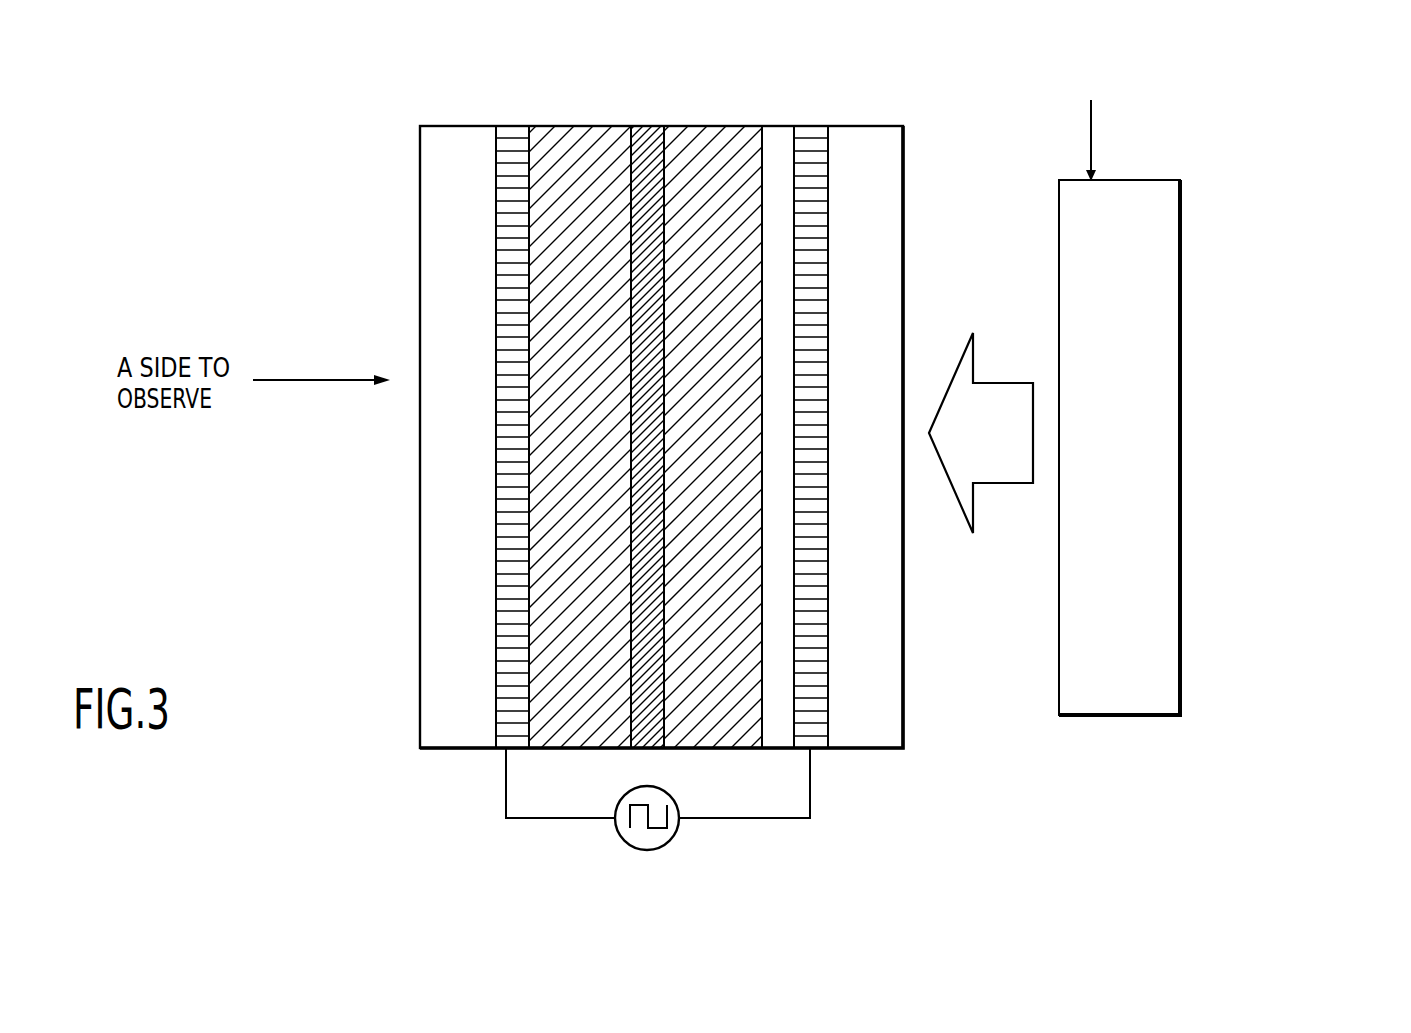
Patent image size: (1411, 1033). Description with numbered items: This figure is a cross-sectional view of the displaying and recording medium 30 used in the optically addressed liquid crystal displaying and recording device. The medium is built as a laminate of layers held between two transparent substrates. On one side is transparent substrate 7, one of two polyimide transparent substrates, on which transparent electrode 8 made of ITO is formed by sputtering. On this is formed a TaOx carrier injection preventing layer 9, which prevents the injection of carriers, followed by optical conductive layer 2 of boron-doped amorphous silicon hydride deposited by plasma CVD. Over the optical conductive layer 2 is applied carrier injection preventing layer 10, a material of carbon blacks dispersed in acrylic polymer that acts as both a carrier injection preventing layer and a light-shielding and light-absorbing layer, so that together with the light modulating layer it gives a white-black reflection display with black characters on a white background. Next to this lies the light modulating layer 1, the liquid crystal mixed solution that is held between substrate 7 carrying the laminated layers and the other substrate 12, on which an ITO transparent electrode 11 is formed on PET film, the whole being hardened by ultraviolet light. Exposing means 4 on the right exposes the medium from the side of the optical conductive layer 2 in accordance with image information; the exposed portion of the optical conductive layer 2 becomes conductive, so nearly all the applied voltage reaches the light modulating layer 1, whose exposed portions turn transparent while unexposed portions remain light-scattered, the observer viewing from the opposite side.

The light modulating layer 1 is at (570, 140).
The optical conductive layer 2 is at (730, 618).
The exposing means 4 is at (1243, 418).
The transparent substrate 7 is at (967, 298).
The transparent electrode 8 is at (815, 225).
The carrier injection preventing layer 9 is at (779, 192).
The carrier injection preventing layer 10 is at (643, 147).
The transparent electrode 11 is at (508, 227).
The substrate 12 is at (428, 160).
The displaying and recording medium 30 is at (437, 811).